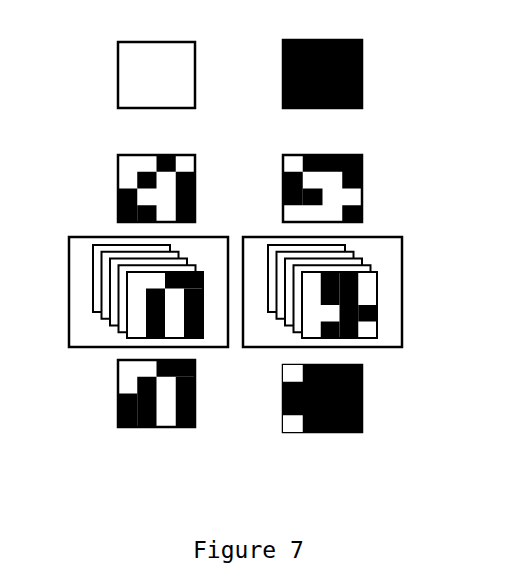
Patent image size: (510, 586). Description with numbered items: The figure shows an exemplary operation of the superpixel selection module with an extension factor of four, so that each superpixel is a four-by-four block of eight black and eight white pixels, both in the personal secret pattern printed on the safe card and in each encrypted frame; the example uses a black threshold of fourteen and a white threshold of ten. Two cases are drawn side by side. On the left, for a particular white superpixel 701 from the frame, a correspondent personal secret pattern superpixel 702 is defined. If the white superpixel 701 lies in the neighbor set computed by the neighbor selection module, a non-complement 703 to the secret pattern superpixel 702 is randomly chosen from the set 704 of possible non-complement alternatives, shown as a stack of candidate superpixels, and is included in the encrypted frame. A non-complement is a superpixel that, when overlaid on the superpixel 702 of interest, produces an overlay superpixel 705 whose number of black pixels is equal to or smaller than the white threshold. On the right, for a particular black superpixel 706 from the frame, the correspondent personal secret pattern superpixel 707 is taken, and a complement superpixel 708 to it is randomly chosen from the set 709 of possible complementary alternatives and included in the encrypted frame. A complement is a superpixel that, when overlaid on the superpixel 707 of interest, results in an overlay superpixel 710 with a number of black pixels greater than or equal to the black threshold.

The white superpixel 701 is at (143, 75).
The personal secret pattern superpixel 702 is at (127, 163).
The non-complement superpixel 703 is at (143, 288).
The set of possible non-complement alternatives 704 is at (78, 287).
The overlay superpixel 705 is at (168, 410).
The black superpixel 706 is at (362, 63).
The personal secret pattern superpixel 707 is at (325, 185).
The complement superpixel 708 is at (367, 293).
The set of possible complementary alternatives 709 is at (385, 250).
The overlay superpixel 710 is at (362, 408).